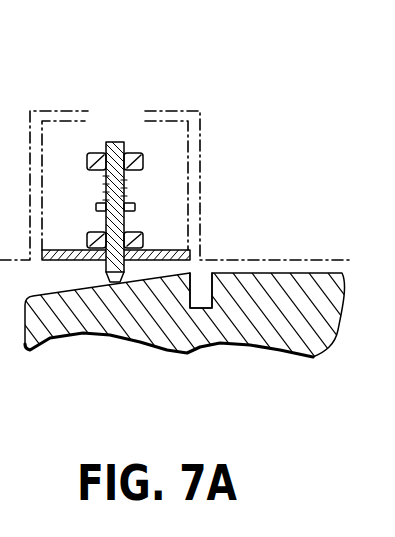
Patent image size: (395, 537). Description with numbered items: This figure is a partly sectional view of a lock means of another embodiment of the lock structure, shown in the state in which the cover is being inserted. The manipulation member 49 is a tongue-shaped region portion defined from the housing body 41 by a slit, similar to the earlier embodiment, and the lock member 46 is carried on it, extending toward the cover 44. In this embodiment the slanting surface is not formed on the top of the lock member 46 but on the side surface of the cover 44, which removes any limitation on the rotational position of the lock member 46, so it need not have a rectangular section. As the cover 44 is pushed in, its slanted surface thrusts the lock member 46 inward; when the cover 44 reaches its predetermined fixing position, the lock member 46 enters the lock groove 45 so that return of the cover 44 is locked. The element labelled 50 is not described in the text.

The housing body 41 is at (258, 198).
The cover 44 is at (107, 310).
The lock groove 45 is at (200, 296).
The lock member 46 is at (118, 140).
The manipulation member 49 is at (60, 187).
The lock nut 50 is at (133, 153).